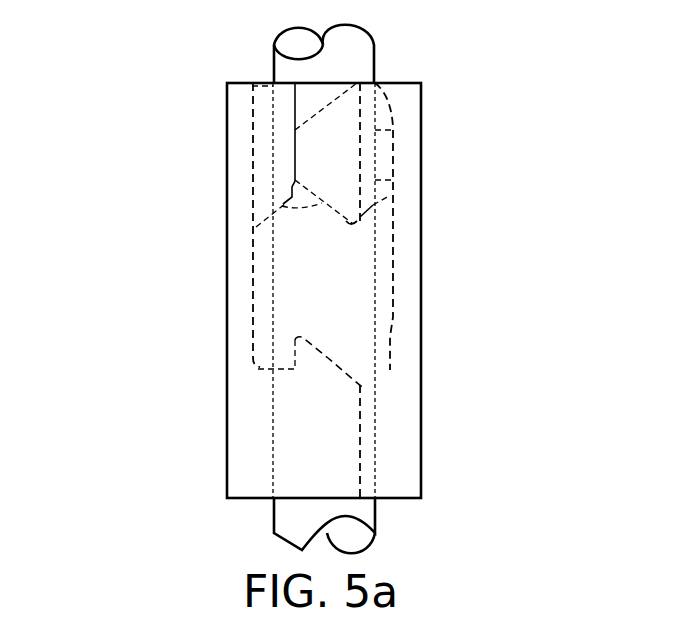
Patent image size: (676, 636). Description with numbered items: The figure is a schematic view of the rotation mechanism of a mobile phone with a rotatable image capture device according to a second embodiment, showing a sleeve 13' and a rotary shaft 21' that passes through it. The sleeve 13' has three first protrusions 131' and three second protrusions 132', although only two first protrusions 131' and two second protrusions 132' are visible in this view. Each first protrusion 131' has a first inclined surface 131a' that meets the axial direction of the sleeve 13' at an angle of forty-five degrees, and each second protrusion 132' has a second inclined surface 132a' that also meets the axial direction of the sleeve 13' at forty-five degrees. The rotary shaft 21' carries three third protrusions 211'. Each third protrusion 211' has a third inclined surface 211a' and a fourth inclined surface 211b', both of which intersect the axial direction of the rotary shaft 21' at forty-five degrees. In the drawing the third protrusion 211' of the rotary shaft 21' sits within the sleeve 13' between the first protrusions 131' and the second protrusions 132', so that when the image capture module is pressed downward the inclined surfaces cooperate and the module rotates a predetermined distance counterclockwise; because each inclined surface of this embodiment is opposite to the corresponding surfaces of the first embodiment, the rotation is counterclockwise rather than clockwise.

The sleeve 13' is at (280, 290).
The rotary shaft 21' is at (372, 285).
The first protrusion 131' is at (275, 226).
The first inclined surface 131a' is at (453, 205).
The third protrusion 211' is at (237, 177).
The third inclined surface 211a' is at (232, 106).
The fourth inclined surface 211b' is at (211, 210).
The second protrusion 132' is at (363, 419).
The second inclined surface 132a' is at (415, 362).